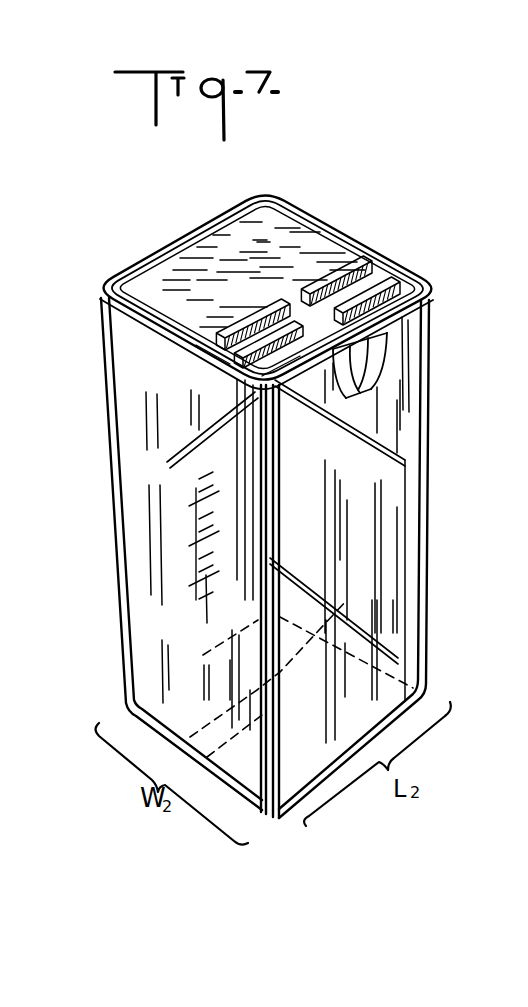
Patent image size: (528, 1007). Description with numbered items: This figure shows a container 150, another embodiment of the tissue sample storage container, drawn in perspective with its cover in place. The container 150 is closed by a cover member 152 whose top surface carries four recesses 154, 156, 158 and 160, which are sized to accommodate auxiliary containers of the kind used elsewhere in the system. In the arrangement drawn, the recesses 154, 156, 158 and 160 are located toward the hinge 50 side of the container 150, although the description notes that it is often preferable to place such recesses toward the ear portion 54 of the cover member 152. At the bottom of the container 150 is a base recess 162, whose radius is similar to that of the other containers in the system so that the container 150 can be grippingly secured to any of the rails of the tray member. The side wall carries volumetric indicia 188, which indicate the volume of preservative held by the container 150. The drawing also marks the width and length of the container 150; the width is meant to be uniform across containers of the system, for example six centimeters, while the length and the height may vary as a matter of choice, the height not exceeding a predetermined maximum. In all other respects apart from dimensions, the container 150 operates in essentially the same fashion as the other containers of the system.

The hinge 50 is at (380, 369).
The ear portion 54 is at (93, 291).
The container 150 is at (432, 501).
The cover member 152 is at (305, 237).
The recess 154 is at (400, 275).
The recess 156 is at (365, 262).
The recess 158 is at (262, 376).
The recess 160 is at (196, 345).
The base recess 162 is at (188, 742).
The volumetric indicia 188 is at (140, 597).